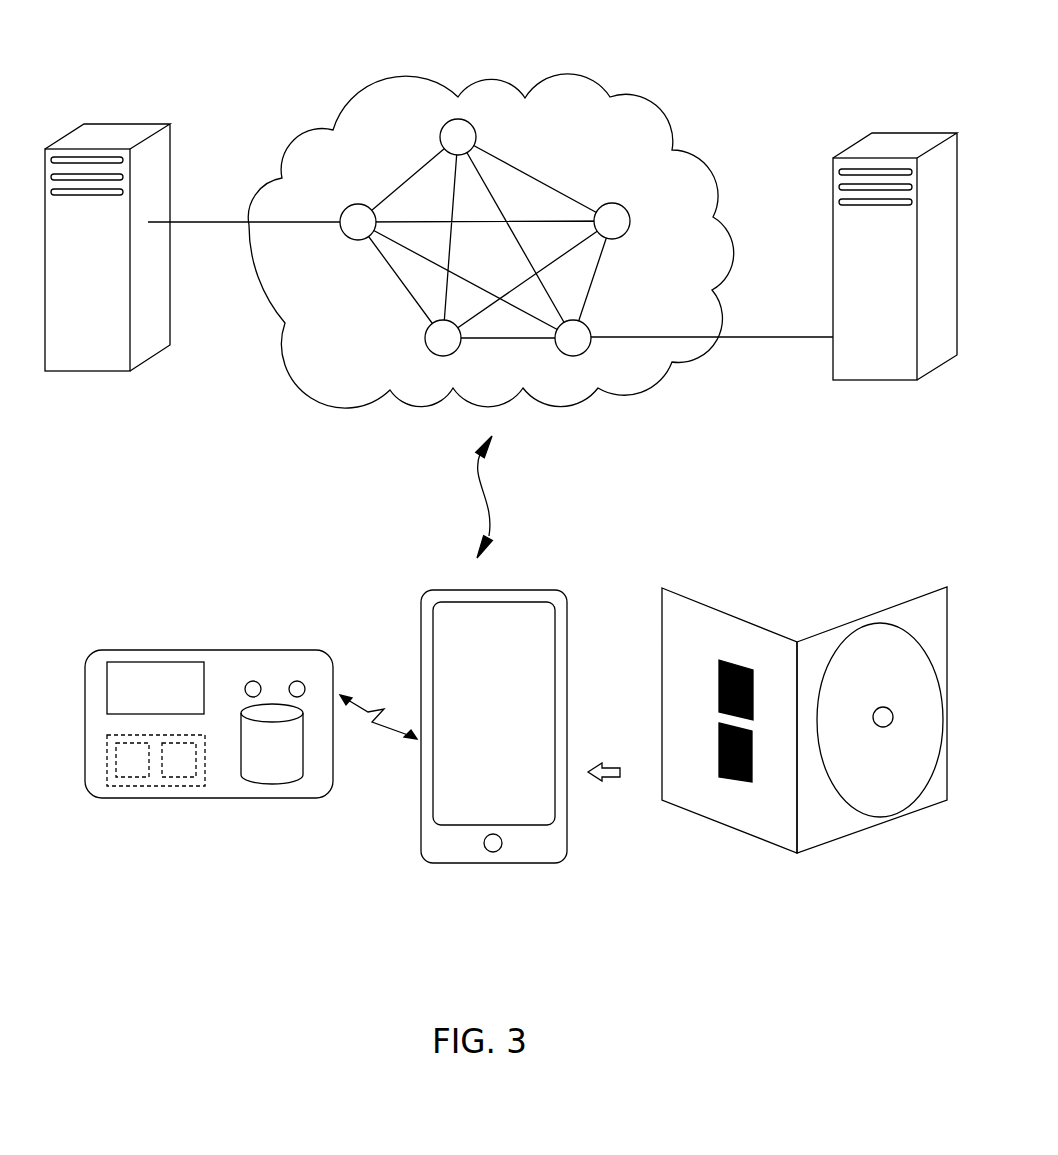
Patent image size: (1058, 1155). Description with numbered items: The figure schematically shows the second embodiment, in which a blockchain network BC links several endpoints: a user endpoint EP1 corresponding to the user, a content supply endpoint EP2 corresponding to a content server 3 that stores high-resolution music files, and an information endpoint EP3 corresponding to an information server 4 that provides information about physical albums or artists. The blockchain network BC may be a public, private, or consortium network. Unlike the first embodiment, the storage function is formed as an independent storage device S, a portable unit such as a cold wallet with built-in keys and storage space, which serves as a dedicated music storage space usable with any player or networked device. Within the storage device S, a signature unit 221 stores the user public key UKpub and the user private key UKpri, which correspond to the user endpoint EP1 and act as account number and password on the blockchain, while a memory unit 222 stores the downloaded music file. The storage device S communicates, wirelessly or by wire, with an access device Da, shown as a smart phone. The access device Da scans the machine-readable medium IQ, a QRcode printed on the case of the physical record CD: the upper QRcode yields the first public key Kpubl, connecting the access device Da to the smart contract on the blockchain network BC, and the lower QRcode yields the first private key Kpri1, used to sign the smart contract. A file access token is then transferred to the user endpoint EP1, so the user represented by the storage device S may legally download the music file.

The information server 4 is at (121, 132).
The content server 3 is at (908, 142).
The blockchain network BC is at (478, 237).
The user endpoint EP1 is at (425, 338).
The content supply endpoint EP2 is at (592, 345).
The information endpoint EP3 is at (343, 234).
The storage device S is at (195, 734).
The user public key UKpub is at (116, 760).
The user private key UKpri is at (196, 760).
The signature unit 221 is at (155, 788).
The memory unit 222 is at (290, 784).
The access device Da is at (537, 852).
The first public key Kpubl is at (753, 673).
The first private key Kpri1 is at (753, 767).
The machine-readable medium IQ is at (731, 740).
The record CD is at (804, 748).